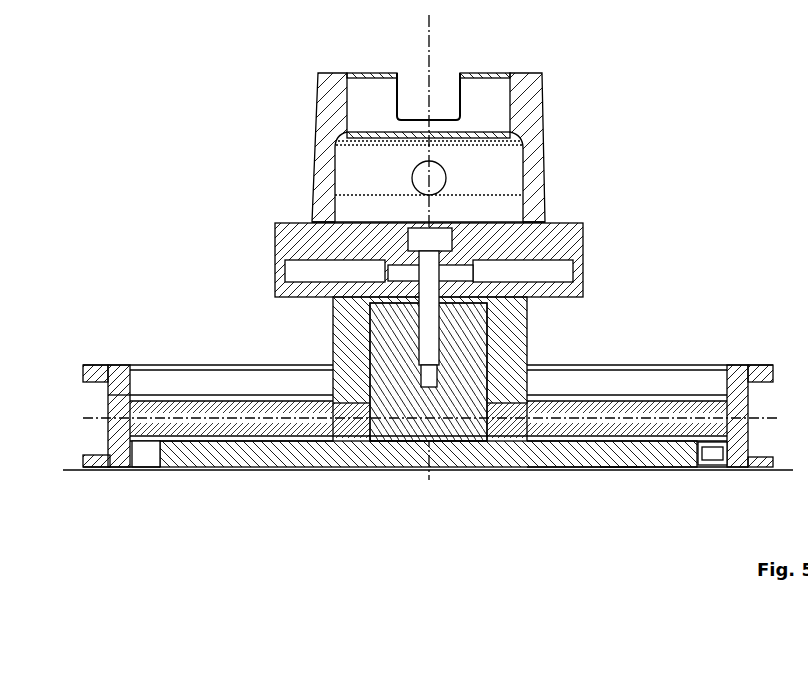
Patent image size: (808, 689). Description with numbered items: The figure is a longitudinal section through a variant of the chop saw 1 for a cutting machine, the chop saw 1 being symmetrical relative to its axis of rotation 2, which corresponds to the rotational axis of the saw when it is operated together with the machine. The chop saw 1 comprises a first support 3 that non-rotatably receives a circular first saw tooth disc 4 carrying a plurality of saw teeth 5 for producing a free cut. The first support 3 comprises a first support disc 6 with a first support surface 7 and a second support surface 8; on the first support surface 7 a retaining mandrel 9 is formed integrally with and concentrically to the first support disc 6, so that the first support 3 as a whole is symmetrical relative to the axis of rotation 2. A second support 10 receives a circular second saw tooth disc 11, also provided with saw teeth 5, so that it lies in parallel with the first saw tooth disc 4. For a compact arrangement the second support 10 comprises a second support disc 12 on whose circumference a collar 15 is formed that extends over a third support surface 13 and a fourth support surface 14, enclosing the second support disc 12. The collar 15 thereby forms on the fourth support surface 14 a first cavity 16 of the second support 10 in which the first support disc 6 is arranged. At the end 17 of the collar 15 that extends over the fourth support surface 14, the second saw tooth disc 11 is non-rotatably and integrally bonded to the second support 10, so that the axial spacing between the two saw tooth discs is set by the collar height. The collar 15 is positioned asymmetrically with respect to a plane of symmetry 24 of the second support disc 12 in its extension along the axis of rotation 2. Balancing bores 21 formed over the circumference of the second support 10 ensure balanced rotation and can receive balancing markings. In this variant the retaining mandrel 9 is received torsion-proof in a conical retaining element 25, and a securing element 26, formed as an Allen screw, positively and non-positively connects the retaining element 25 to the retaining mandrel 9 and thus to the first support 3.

The chop saw 1 is at (634, 160).
The axis of rotation 2 is at (432, 36).
The first support 3 is at (578, 470).
The first saw tooth disc 4 is at (147, 470).
The saw teeth 5 is at (715, 471).
The first support disc 6 is at (617, 470).
The first support surface 7 is at (222, 440).
The second support surface 8 is at (225, 470).
The retaining mandrel 9 is at (388, 330).
The second support 10 is at (581, 404).
The second saw tooth disc 11 is at (72, 475).
The second support disc 12 is at (650, 412).
The third support surface 13 is at (270, 435).
The fourth support surface 14 is at (272, 458).
The collar 15 is at (108, 446).
The first cavity 16 is at (146, 454).
The end 17 is at (105, 470).
The balancing bores 21 is at (748, 415).
The plane of symmetry 24 is at (104, 417).
The retaining element 25 is at (585, 238).
The securing element 26 is at (446, 226).